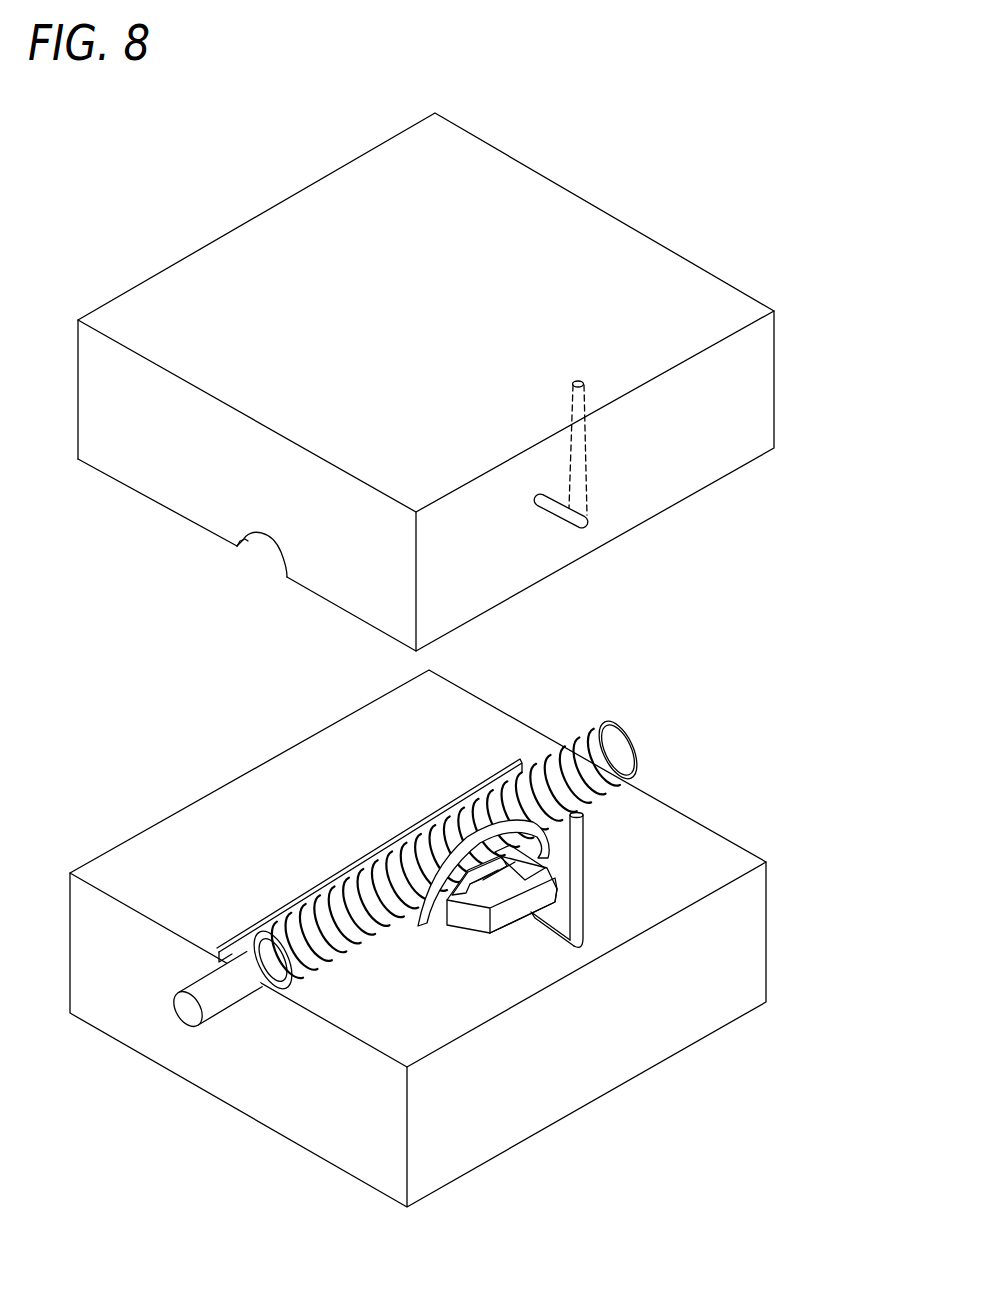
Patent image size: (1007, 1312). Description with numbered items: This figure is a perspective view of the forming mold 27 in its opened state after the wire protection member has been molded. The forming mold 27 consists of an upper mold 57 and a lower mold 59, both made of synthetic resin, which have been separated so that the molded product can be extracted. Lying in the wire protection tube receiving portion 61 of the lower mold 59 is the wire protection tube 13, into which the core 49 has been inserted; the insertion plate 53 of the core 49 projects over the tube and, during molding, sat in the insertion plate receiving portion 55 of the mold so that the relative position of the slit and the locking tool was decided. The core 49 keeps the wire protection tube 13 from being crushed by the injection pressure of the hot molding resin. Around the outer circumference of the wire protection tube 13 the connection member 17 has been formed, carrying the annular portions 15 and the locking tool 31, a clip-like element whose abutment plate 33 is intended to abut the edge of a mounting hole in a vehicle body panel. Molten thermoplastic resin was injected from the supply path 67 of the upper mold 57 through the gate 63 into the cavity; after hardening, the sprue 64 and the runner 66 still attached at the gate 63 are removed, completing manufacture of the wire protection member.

The wire protection tube 13 is at (636, 737).
The annular portions 15 is at (433, 827).
The connection member 17 is at (472, 934).
The forming mold 27 is at (67, 598).
The locking tool 31 is at (540, 887).
The abutment plate 33 is at (487, 784).
The core 49 is at (173, 1022).
The insertion plate 53 is at (498, 767).
The insertion plate receiving portion 55 is at (236, 544).
The upper mold 57 is at (153, 508).
The lower mold 59 is at (136, 832).
The wire protection tube receiving portion 61 is at (255, 548).
The gate 63 is at (538, 930).
The sprue 64 is at (580, 890).
The runner 66 is at (550, 932).
The supply path 67 is at (577, 380).